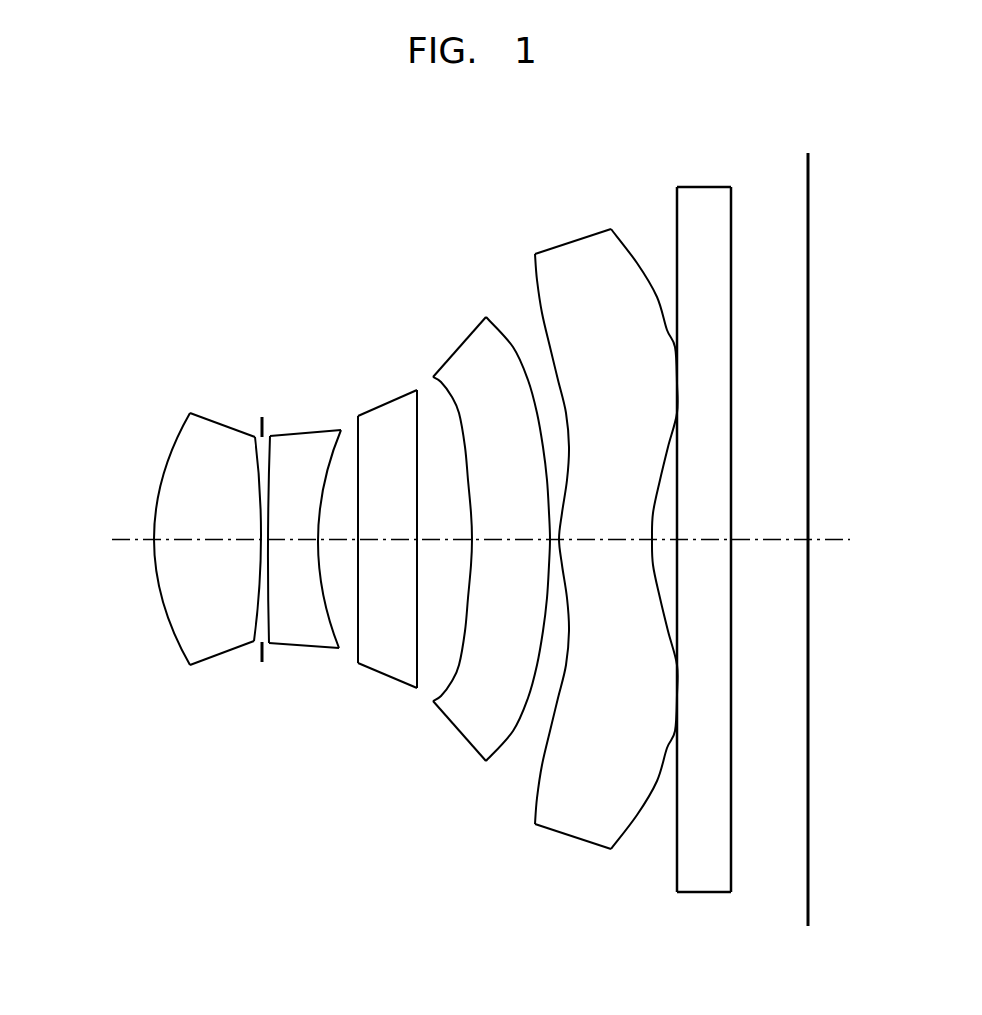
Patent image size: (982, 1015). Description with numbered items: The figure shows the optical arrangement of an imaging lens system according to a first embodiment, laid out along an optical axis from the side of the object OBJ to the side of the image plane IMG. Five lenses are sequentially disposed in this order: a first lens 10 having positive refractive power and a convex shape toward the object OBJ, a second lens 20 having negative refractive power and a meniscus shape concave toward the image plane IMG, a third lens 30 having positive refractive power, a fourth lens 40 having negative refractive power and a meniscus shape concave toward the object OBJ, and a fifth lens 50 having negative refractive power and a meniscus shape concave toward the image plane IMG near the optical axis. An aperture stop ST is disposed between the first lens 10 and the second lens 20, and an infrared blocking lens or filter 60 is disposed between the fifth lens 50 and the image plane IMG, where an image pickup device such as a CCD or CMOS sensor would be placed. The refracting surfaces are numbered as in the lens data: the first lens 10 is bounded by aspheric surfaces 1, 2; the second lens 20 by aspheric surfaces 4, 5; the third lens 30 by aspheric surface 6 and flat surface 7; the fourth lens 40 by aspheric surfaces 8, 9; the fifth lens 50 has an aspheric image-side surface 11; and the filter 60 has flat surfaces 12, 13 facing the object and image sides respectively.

The first lens 10 is at (357, 574).
The second lens 20 is at (304, 550).
The third lens 30 is at (387, 556).
The fourth lens 40 is at (488, 562).
The fifth lens 50 is at (606, 552).
The infrared blocking lens or filter 60 is at (700, 546).
The aperture stop ST is at (257, 422).
The object OBJ is at (453, 541).
The image plane IMG is at (810, 905).
The first surface 1 is at (175, 640).
The second surface 2 is at (257, 618).
The fourth surface 4 is at (270, 620).
The fifth surface 5 is at (328, 620).
The sixth surface 6 is at (360, 645).
The seventh surface 7 is at (412, 665).
The eighth surface 8 is at (452, 720).
The ninth surface 9 is at (498, 745).
The eleventh surface 11 is at (624, 836).
The twelfth surface 12 is at (676, 876).
The thirteenth surface 13 is at (733, 876).